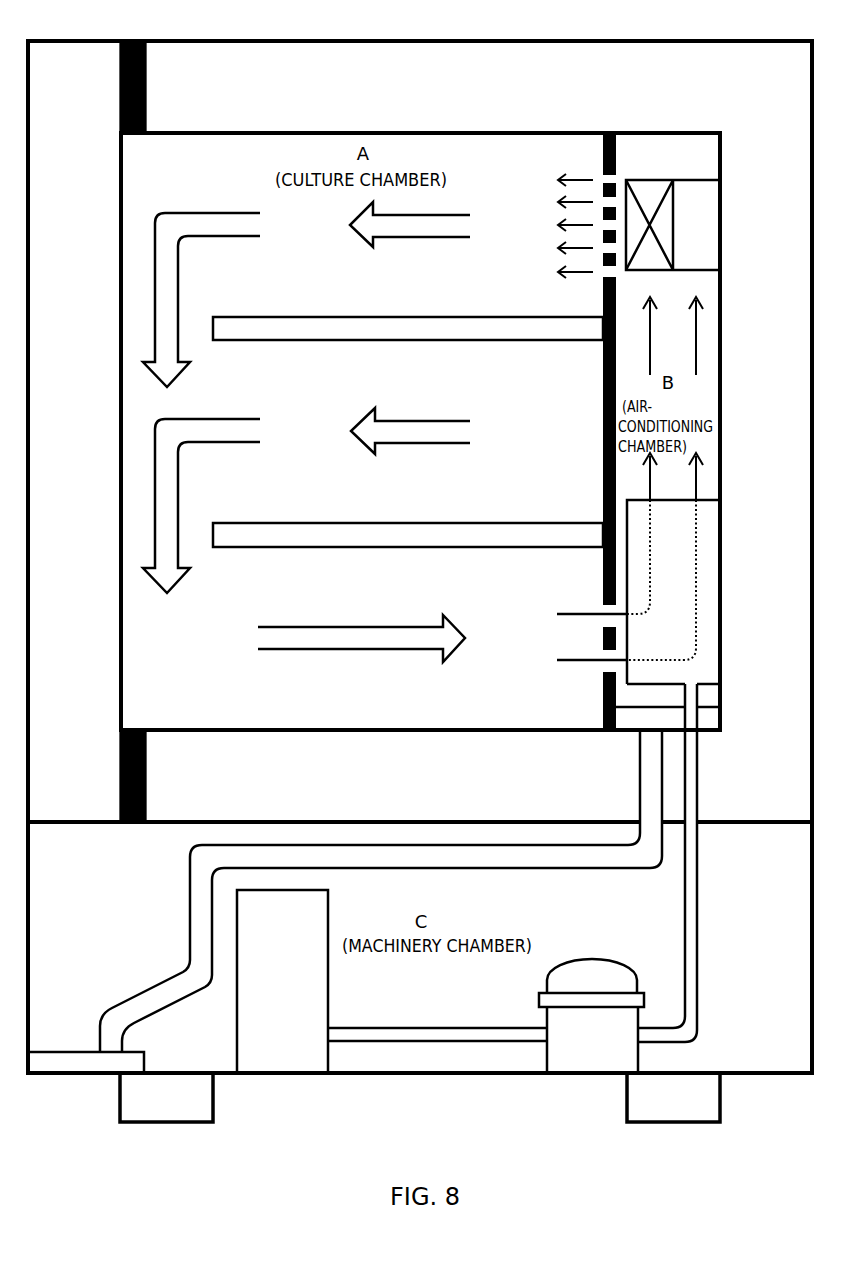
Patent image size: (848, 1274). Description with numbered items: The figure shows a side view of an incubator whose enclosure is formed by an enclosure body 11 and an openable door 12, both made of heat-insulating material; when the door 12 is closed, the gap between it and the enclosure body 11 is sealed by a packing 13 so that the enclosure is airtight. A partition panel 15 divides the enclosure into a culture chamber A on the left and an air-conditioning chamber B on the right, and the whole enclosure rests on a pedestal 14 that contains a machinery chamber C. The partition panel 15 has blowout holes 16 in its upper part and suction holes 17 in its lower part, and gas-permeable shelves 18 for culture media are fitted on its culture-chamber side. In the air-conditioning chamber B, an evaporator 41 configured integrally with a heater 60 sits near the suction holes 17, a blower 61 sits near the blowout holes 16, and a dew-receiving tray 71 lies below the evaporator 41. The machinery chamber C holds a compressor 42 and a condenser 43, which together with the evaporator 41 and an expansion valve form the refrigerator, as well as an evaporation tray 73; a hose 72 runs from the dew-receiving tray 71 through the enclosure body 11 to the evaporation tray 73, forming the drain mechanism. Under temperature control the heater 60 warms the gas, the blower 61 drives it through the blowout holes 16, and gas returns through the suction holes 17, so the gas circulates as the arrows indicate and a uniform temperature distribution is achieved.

The enclosure body 11 is at (485, 41).
The door 12 is at (78, 41).
The packing 13 is at (135, 41).
The pedestal 14 is at (420, 1073).
The partition panel 15 is at (603, 430).
The blowout holes 16 is at (603, 178).
The suction holes 17 is at (603, 605).
The shelves 18 is at (410, 317).
The evaporator 41 is at (714, 575).
The heater 60 is at (710, 500).
The blower 61 is at (648, 180).
The dew-receiving tray 71 is at (708, 707).
The hose 72 is at (428, 868).
The evaporation tray 73 is at (146, 1060).
The compressor 42 is at (592, 960).
The condenser 43 is at (330, 1005).